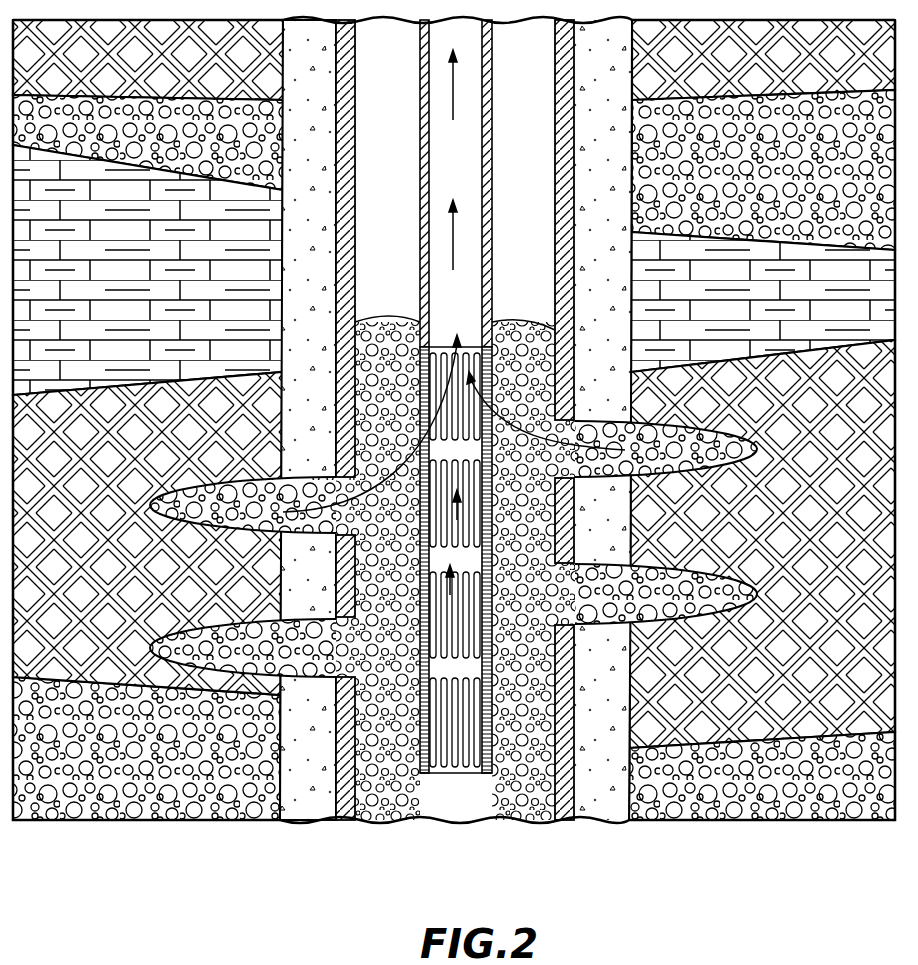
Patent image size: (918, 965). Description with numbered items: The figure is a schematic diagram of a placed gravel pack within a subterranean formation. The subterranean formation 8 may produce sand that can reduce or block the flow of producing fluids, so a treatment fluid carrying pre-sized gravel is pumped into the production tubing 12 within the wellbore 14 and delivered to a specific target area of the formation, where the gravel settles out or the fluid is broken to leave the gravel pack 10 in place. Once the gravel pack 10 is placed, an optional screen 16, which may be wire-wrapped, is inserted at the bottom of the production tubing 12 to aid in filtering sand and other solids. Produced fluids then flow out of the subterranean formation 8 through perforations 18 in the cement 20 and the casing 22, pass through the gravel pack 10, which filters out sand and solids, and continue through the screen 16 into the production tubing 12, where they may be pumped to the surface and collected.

The subterranean formation 8 is at (100, 464).
The gravel pack 10 is at (342, 573).
The production tubing 12 is at (490, 135).
The wellbore 14 is at (283, 692).
The screen 16 is at (600, 514).
The perforations 18 is at (700, 433).
The cement 20 is at (603, 706).
The casing 22 is at (580, 650).